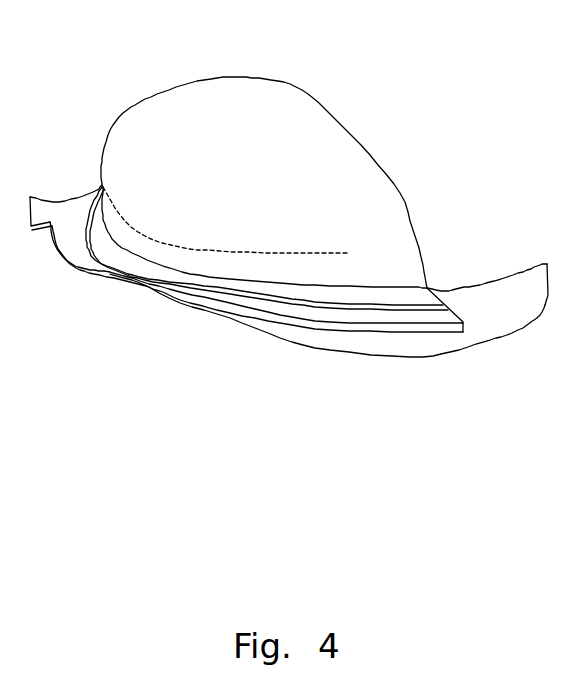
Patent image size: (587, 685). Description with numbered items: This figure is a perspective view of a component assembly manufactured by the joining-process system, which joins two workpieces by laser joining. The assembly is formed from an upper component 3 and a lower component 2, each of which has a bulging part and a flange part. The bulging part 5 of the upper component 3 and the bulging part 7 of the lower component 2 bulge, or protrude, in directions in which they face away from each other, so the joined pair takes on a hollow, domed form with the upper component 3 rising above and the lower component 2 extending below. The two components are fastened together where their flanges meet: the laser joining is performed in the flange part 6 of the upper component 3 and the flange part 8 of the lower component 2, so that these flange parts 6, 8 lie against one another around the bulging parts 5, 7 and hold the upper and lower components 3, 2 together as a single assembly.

The lower component 2 is at (440, 433).
The upper component 3 is at (350, 45).
The bulging part 5 is at (328, 133).
The flange part 6 is at (405, 295).
The bulging part 7 is at (423, 340).
The flange part 8 is at (323, 317).